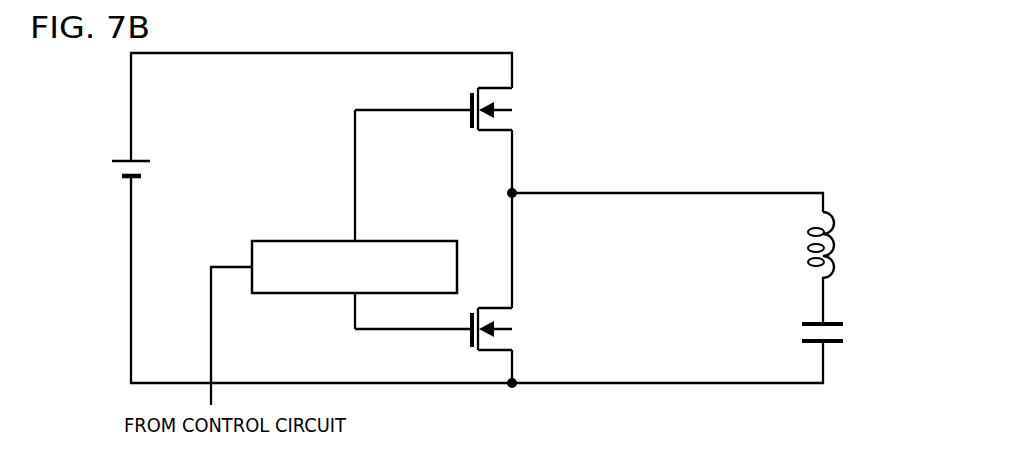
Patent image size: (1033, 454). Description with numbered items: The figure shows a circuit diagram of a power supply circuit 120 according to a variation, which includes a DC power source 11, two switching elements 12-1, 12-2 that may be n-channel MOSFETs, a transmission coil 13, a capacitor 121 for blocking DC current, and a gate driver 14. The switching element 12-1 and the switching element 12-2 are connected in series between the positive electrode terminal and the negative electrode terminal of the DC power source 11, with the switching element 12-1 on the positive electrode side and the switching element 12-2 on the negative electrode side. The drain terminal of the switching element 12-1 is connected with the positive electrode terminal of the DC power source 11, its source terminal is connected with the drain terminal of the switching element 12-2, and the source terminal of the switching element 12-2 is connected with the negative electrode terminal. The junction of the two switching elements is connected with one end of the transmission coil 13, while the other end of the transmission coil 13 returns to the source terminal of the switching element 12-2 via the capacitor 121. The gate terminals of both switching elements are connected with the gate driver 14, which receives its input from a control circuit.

The DC power source 11 is at (151, 168).
The switching element 12-1 is at (520, 111).
The switching element 12-2 is at (520, 330).
The transmission coil 13 is at (850, 251).
The gate driver 14 is at (288, 241).
The power supply circuit 120 is at (775, 121).
The capacitor 121 is at (850, 334).